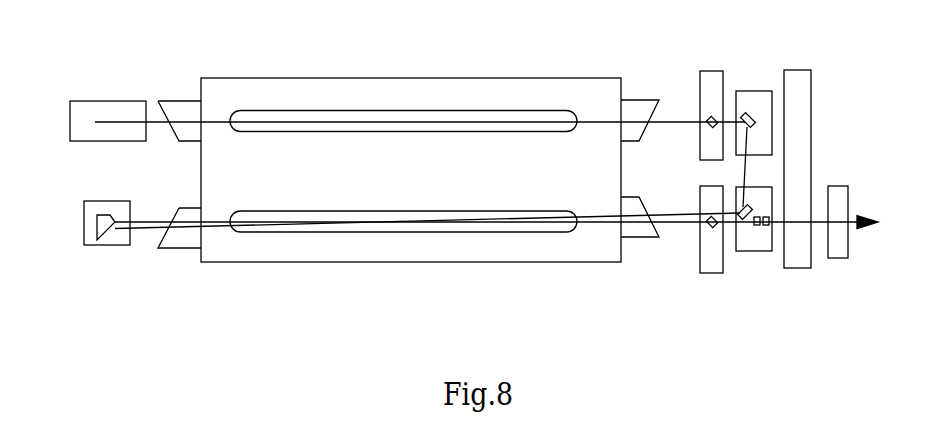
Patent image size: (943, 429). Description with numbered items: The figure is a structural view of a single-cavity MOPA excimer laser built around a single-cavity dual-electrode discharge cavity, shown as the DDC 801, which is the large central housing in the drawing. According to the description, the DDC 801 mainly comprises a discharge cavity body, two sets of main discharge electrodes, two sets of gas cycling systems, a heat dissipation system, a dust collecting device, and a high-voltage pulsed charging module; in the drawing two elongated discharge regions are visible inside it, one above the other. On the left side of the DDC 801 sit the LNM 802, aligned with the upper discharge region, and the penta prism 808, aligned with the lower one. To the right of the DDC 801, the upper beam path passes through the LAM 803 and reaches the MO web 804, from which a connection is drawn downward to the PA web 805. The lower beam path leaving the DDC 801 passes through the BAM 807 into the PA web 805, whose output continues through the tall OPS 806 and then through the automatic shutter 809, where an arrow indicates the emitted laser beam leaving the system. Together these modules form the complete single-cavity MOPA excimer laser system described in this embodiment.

The single-cavity dual-electrode discharge cavity 801 is at (400, 77).
The LNM 802 is at (132, 142).
The LAM 803 is at (700, 108).
The MO web 804 is at (753, 90).
The PA web 805 is at (765, 255).
The OPS 806 is at (813, 108).
The BAM 807 is at (700, 202).
The penta prism 808 is at (122, 247).
The automatic shutter 809 is at (850, 197).